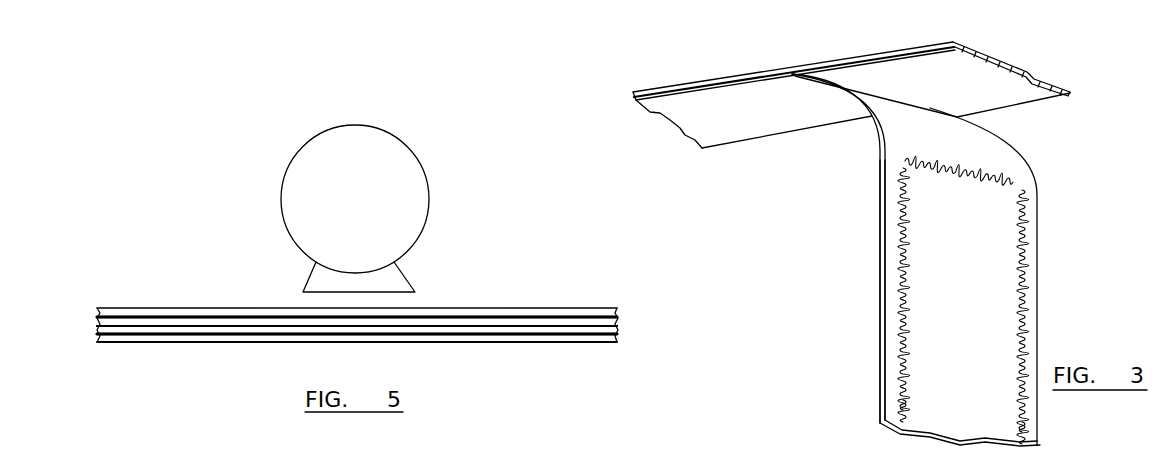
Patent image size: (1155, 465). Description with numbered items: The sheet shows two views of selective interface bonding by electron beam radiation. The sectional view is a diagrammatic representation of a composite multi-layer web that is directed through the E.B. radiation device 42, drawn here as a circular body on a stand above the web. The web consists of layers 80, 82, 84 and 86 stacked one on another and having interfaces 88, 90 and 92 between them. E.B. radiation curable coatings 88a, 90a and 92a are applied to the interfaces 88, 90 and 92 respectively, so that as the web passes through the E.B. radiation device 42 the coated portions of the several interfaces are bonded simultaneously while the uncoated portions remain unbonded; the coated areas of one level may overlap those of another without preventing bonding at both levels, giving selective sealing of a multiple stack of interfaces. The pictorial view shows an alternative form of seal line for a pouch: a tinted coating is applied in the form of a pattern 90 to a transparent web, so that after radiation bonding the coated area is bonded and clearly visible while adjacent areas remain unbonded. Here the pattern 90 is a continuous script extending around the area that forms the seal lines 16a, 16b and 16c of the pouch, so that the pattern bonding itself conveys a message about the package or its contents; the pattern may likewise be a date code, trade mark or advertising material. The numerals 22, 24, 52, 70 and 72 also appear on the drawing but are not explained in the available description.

In FIG. 5, the E.B. radiation device 42 is at (418, 160).
In FIG. 5, the layer 80 is at (617, 310).
In FIG. 5, the layer 82 is at (617, 321).
In FIG. 5, the layer 84 is at (617, 333).
In FIG. 5, the layer 86 is at (617, 342).
In FIG. 5, the interface 88 is at (456, 315).
In FIG. 5, the E.B. radiation curable coating 88a is at (202, 317).
In FIG. 5, the interface / pattern 90 is at (412, 327).
In FIG. 3, the interface / pattern 90 is at (897, 293).
In FIG. 5, the E.B. radiation curable coating 90a is at (340, 328).
In FIG. 5, the interface 92 is at (383, 335).
In FIG. 5, the E.B. radiation curable coating 92a is at (243, 336).
In FIG. 5, the element 52 is at (615, 460).
In FIG. 3, the top sheet 24 is at (1025, 80).
In FIG. 3, the pouch 22 is at (1040, 238).
In FIG. 3, the seal line 16a is at (1020, 280).
In FIG. 3, the seal line 16b is at (963, 178).
In FIG. 3, the seal line 16c is at (912, 320).
In FIG. 3, the element 70 is at (1029, 460).
In FIG. 3, the element 72 is at (1023, 460).